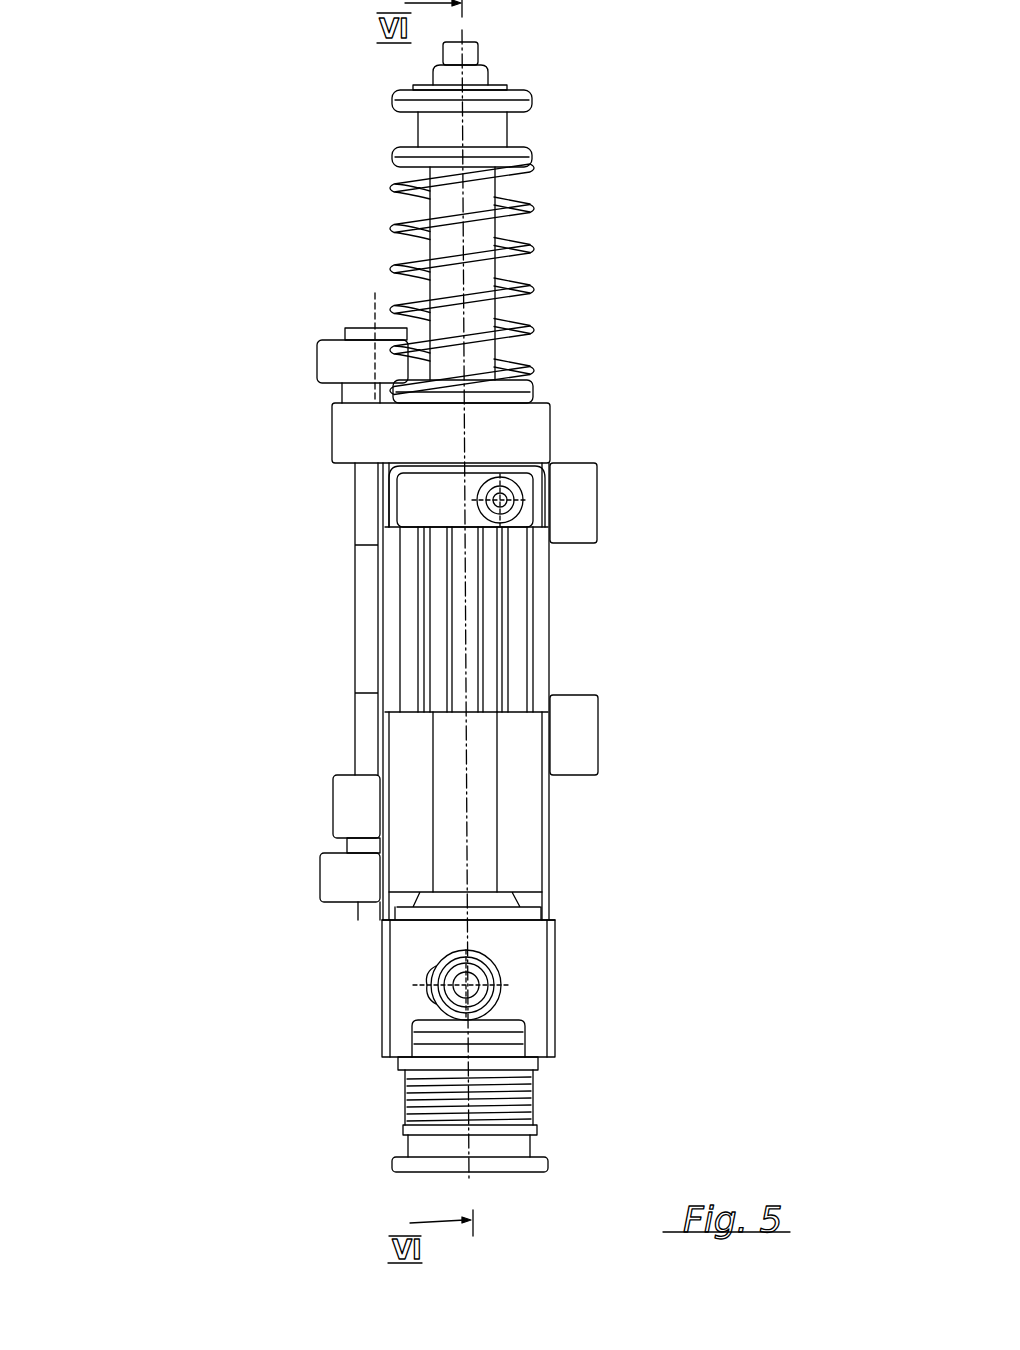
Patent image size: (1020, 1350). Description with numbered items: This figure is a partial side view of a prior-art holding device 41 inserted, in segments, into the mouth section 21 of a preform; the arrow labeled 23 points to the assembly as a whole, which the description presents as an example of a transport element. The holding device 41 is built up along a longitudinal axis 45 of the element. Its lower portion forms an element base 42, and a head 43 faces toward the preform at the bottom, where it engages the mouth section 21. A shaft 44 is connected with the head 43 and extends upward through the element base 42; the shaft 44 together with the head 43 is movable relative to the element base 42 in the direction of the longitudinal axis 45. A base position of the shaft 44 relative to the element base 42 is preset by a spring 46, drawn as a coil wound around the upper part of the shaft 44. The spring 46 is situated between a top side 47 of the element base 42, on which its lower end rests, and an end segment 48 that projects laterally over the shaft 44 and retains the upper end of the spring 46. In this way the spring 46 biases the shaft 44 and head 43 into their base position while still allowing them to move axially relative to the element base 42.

The mouth section 21 is at (392, 1109).
The valve unit 23 is at (173, 441).
The holding device 41 is at (661, 546).
The element base 42 is at (535, 838).
The head 43 is at (580, 1039).
The shaft 44 is at (488, 315).
The longitudinal axis 45 is at (473, 242).
The spring 46 is at (530, 208).
The top side 47 is at (535, 397).
The end segment 48 is at (395, 152).